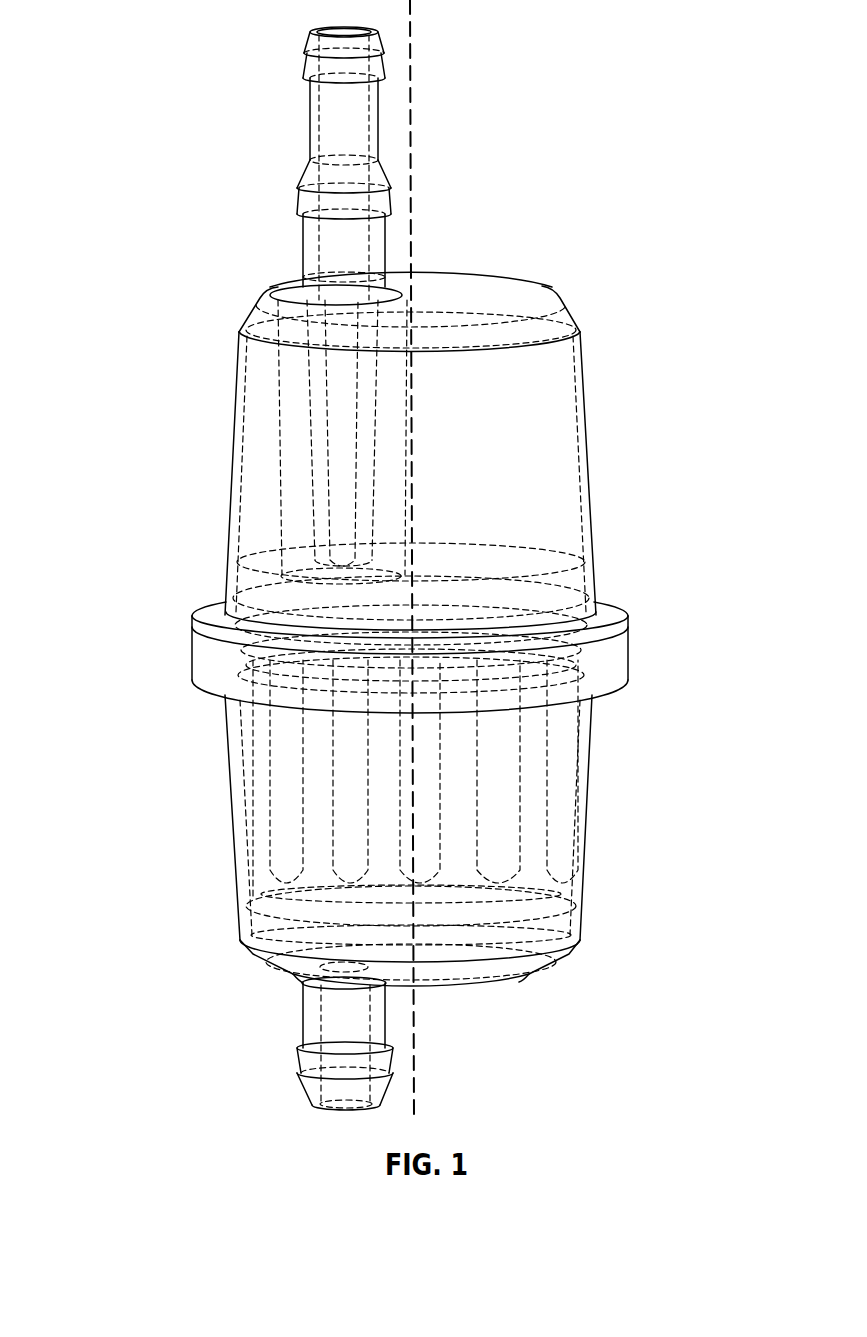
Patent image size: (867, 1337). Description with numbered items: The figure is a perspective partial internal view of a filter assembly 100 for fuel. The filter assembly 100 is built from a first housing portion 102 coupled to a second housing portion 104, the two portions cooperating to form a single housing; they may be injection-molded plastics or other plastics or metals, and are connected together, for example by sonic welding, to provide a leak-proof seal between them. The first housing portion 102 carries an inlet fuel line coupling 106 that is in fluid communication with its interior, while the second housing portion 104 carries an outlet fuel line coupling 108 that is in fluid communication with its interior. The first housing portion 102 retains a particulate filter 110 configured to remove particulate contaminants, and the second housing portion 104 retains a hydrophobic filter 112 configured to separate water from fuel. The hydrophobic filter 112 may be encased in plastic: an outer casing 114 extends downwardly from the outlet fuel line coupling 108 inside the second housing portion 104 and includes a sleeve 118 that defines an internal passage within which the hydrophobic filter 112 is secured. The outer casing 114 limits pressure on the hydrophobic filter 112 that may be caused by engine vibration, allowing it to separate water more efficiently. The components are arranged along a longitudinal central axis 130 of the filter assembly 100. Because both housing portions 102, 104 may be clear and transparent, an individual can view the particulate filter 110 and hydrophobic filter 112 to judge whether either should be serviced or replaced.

The filter assembly 100 is at (136, 152).
The first housing portion 102 is at (588, 768).
The second housing portion 104 is at (614, 401).
The inlet fuel line coupling 106 is at (385, 1013).
The outlet fuel line coupling 108 is at (382, 227).
The particulate filter 110 is at (528, 738).
The hydrophobic filter 112 is at (318, 402).
The outer casing 114 is at (287, 508).
The sleeve 118 is at (283, 528).
The longitudinal central axis 130 is at (411, 136).